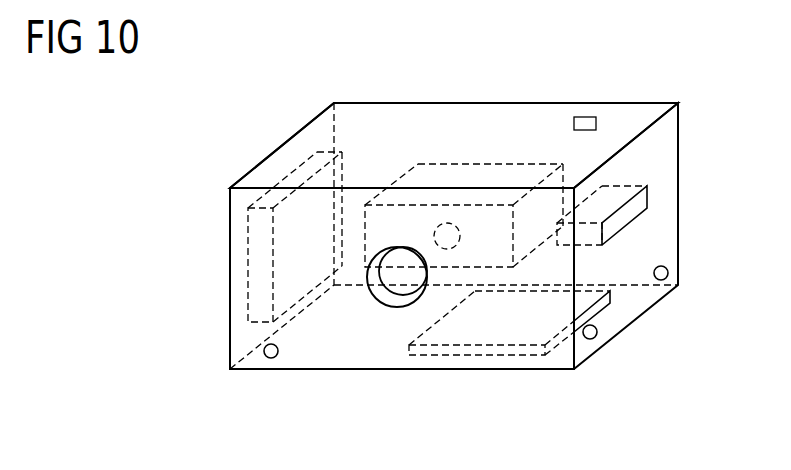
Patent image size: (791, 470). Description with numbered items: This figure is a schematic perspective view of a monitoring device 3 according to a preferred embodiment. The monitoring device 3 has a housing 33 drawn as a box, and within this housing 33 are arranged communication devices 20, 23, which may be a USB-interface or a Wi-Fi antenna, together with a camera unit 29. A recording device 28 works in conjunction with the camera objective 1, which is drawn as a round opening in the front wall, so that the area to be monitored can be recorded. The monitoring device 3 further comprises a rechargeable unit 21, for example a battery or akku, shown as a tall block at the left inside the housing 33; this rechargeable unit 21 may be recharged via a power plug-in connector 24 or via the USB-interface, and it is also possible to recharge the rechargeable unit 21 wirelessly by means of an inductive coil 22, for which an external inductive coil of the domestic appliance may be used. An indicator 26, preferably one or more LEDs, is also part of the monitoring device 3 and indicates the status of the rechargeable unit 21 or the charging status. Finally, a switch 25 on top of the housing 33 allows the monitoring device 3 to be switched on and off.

The camera objective 1 is at (386, 298).
The monitoring device 3 is at (383, 122).
The communication device 20 is at (464, 142).
The camera unit 29 is at (476, 175).
The rechargeable unit 21 is at (257, 232).
The inductive coil 22 is at (597, 335).
The communication device 23 is at (643, 200).
The power plug-in connector 24 is at (669, 272).
The switch 25 is at (585, 117).
The indicator 26 is at (270, 358).
The recording device 28 is at (446, 240).
The housing 33 is at (628, 120).